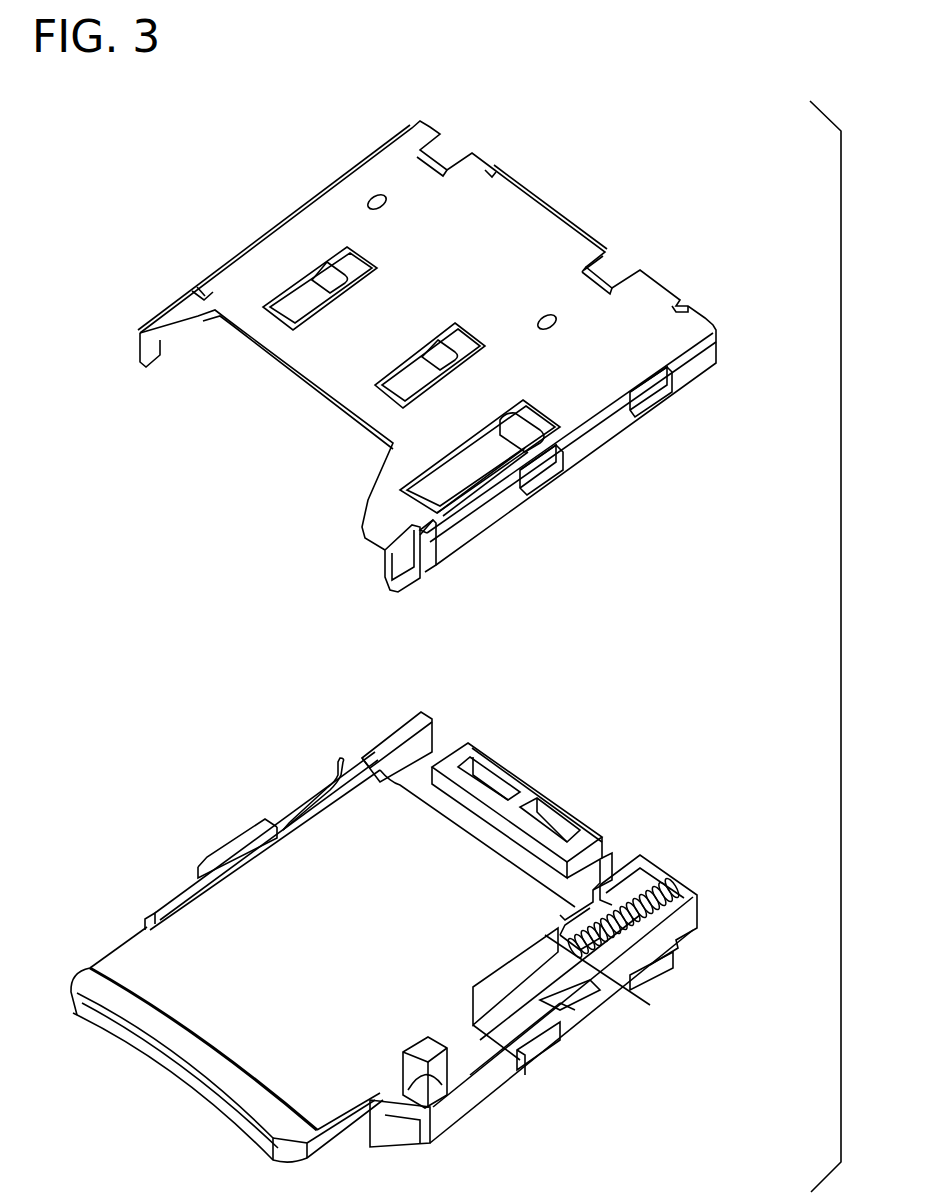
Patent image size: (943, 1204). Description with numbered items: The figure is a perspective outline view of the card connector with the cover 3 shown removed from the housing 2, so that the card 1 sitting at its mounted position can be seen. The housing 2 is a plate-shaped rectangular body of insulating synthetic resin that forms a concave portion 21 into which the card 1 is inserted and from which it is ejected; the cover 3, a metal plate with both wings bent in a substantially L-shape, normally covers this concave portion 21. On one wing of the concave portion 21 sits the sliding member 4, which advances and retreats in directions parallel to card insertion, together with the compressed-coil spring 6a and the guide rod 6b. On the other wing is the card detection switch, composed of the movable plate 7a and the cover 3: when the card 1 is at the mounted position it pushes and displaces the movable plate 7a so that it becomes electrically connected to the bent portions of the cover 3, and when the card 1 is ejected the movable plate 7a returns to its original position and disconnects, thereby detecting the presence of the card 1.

The card 1 is at (105, 942).
The housing 2 is at (440, 705).
The cover 3 is at (548, 203).
The sliding member 4 is at (570, 1005).
The compressed-coil spring 6a is at (660, 890).
The guide rod 6b is at (467, 1060).
The movable plate 7a is at (318, 790).
The concave portion 21 is at (582, 890).